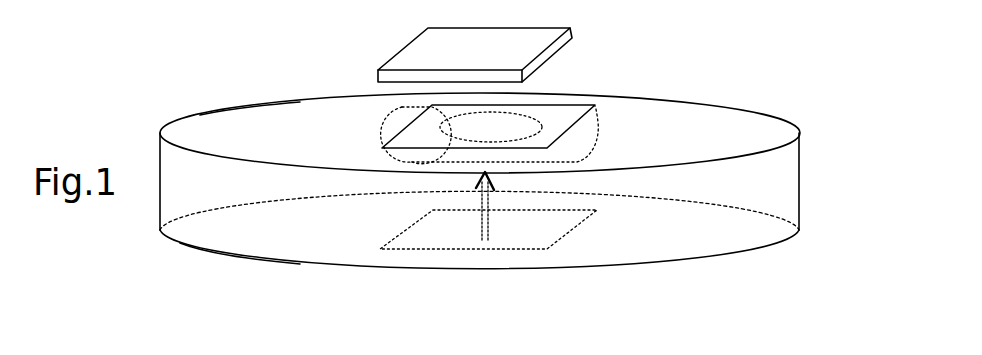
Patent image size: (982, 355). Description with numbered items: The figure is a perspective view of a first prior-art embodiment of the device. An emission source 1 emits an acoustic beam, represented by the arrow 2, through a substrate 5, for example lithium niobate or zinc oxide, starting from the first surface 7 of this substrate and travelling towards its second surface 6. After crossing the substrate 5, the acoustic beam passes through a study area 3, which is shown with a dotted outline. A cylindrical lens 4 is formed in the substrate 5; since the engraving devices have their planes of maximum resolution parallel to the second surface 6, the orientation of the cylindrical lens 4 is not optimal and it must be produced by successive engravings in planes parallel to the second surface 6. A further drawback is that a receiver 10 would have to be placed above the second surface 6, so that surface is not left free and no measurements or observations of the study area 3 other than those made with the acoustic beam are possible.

The emission source 1 is at (440, 238).
The arrow 2 is at (493, 225).
The study area 3 is at (384, 111).
The cylindrical lens 4 is at (598, 127).
The substrate 5 is at (792, 177).
The second surface 6 is at (248, 113).
The first surface 7 is at (222, 254).
The receiver 10 is at (570, 50).